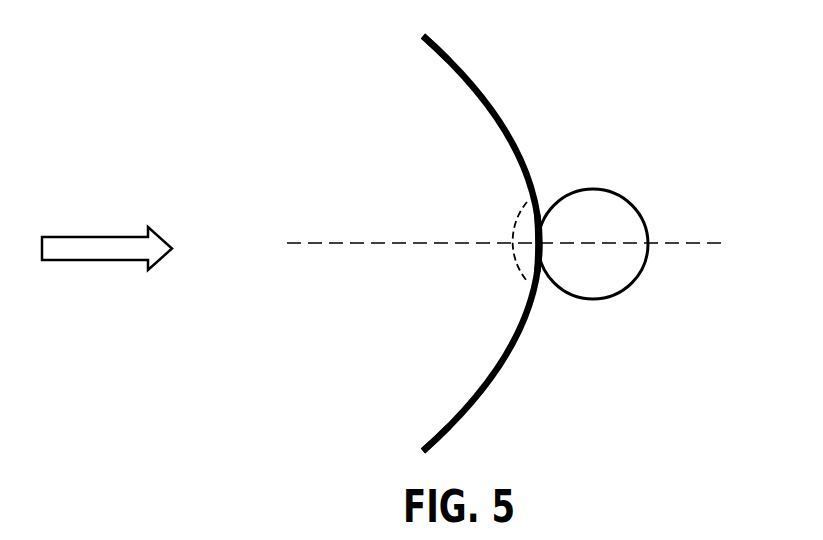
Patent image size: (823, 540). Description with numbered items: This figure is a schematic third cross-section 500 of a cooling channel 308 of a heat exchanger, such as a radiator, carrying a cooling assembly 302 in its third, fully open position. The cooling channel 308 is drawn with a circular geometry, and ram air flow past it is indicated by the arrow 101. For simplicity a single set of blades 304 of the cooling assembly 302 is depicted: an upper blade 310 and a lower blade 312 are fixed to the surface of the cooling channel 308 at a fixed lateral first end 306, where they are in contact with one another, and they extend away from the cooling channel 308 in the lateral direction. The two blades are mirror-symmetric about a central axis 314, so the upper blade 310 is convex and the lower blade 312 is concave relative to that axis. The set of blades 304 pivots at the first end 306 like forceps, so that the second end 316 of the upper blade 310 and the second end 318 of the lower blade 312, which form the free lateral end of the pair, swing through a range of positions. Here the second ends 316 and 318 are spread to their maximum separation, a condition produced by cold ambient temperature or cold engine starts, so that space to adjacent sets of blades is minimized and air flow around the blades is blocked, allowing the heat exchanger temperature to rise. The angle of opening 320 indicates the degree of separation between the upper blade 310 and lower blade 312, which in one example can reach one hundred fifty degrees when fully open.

The arrow 101 is at (88, 258).
The third cross-section 500 is at (228, 30).
The cooling assembly 302 is at (332, 80).
The set of blades 304 is at (305, 263).
The first end 306 is at (537, 215).
The cooling channel 308 is at (627, 288).
The upper blade 310 is at (491, 108).
The lower blade 312 is at (496, 375).
The central axis 314 is at (698, 244).
The second end 316 is at (423, 37).
The second end 318 is at (421, 450).
The angle of opening 320 is at (514, 225).